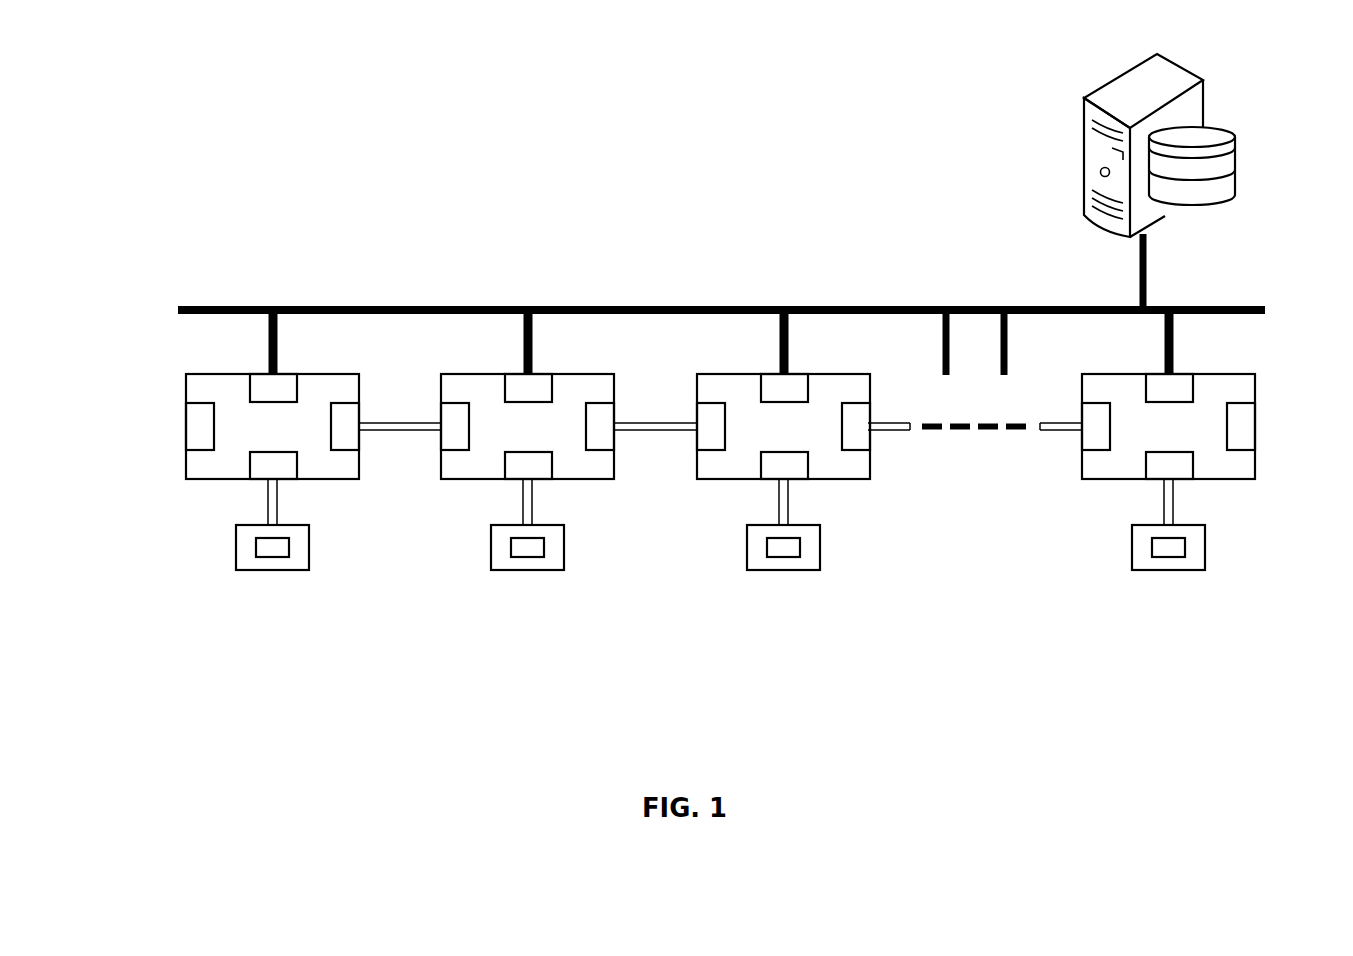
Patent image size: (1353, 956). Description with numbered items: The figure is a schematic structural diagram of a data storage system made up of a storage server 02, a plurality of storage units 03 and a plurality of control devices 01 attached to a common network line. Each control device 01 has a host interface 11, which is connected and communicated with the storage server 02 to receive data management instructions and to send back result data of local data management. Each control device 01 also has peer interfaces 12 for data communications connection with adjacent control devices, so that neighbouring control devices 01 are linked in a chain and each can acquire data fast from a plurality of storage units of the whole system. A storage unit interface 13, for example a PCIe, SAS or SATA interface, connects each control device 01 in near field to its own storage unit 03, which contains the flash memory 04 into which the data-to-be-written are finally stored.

The control device 01 is at (321, 373).
The storage server 02 is at (1083, 143).
The storage unit 03 is at (270, 572).
The flash memory 04 is at (290, 552).
The host interface 11 is at (257, 373).
The peer interface 12 is at (186, 428).
The storage unit interface 13 is at (258, 481).